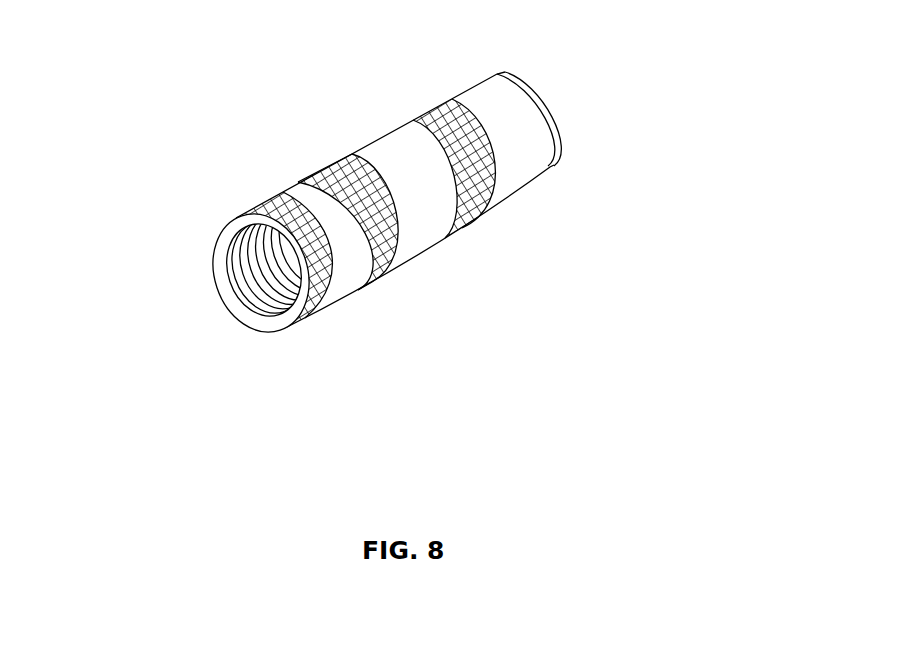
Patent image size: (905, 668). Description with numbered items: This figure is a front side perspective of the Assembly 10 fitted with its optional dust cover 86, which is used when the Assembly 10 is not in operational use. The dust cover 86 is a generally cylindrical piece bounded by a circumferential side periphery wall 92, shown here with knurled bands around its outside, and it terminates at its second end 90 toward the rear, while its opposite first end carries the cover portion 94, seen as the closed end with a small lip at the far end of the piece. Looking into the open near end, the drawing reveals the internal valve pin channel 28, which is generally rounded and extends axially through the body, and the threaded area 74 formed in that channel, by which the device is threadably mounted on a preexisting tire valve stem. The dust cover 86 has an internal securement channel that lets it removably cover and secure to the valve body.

The Assembly 10 is at (392, 208).
The valve pin channel 28 is at (218, 273).
The threaded area 74 is at (255, 304).
The dust cover 86 is at (573, 217).
The second end 90 is at (398, 267).
The side periphery wall 92 is at (345, 158).
The cover portion 94 is at (551, 112).